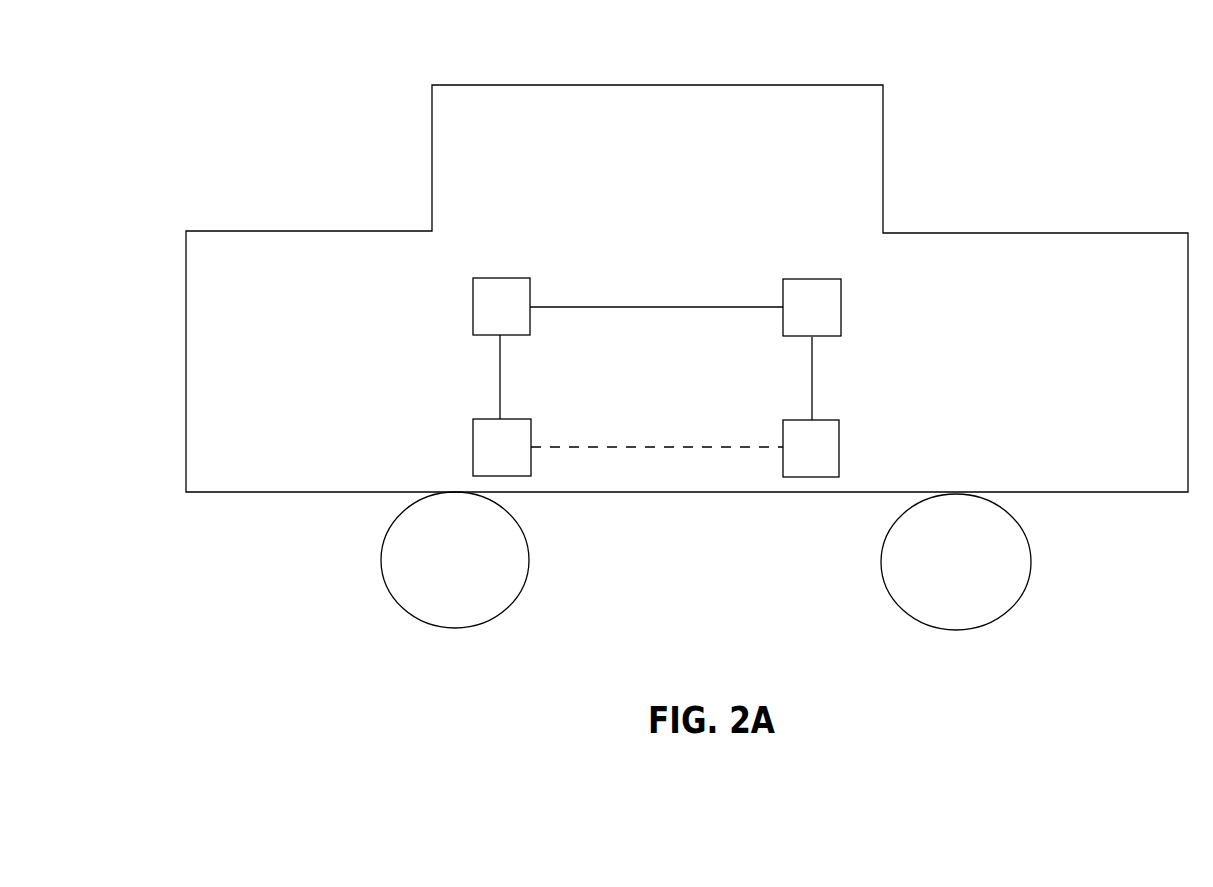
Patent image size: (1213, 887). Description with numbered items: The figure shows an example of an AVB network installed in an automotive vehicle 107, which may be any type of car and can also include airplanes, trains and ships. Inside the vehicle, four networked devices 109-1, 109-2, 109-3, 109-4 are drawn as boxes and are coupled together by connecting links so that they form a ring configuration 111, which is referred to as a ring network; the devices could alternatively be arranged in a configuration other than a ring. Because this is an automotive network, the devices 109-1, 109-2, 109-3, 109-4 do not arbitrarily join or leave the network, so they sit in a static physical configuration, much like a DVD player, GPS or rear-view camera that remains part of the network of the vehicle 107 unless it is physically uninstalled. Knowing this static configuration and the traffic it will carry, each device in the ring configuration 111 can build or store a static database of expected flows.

The automotive vehicle 107 is at (493, 85).
The ring configuration 111 is at (665, 267).
The device 109-1 is at (473, 316).
The device 109-2 is at (841, 312).
The device 109-3 is at (473, 449).
The device 109-4 is at (839, 452).